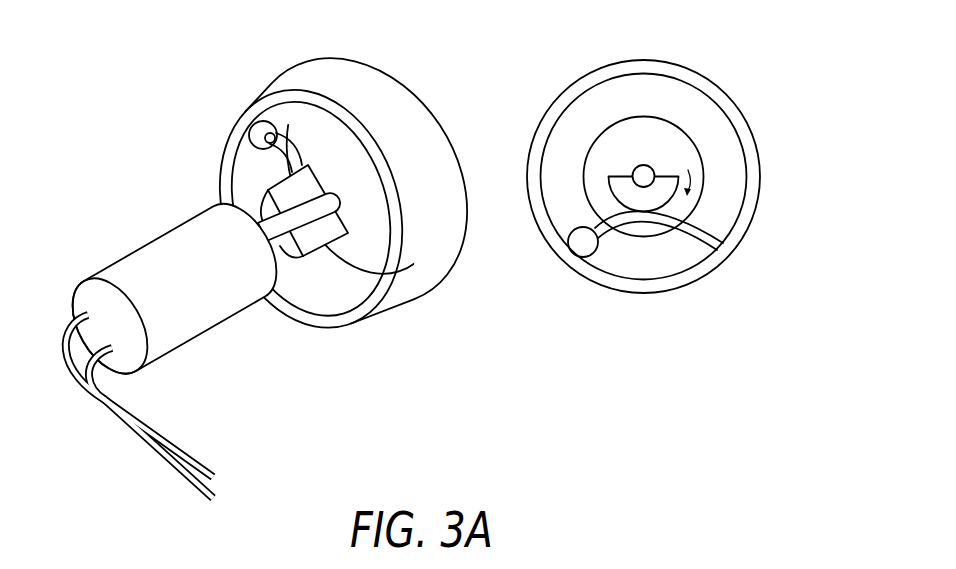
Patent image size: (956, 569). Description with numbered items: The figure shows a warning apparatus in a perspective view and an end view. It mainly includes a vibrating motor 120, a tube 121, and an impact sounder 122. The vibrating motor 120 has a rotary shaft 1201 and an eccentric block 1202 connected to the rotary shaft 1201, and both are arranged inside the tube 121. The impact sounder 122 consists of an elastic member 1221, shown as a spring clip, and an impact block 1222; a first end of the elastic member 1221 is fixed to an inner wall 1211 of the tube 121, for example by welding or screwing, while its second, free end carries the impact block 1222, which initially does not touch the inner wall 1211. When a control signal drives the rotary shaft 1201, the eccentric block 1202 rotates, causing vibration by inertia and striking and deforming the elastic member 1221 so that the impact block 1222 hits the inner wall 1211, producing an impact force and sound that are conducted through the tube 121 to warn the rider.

The vibrating motor 120 is at (118, 246).
The tube 121 is at (268, 66).
The rotary shaft 1201 is at (266, 232).
The eccentric block 1202 is at (318, 242).
The inner wall 1211 is at (719, 108).
The impact sounder 122 is at (725, 209).
The elastic member 1221 is at (683, 232).
The impact block 1222 is at (583, 250).